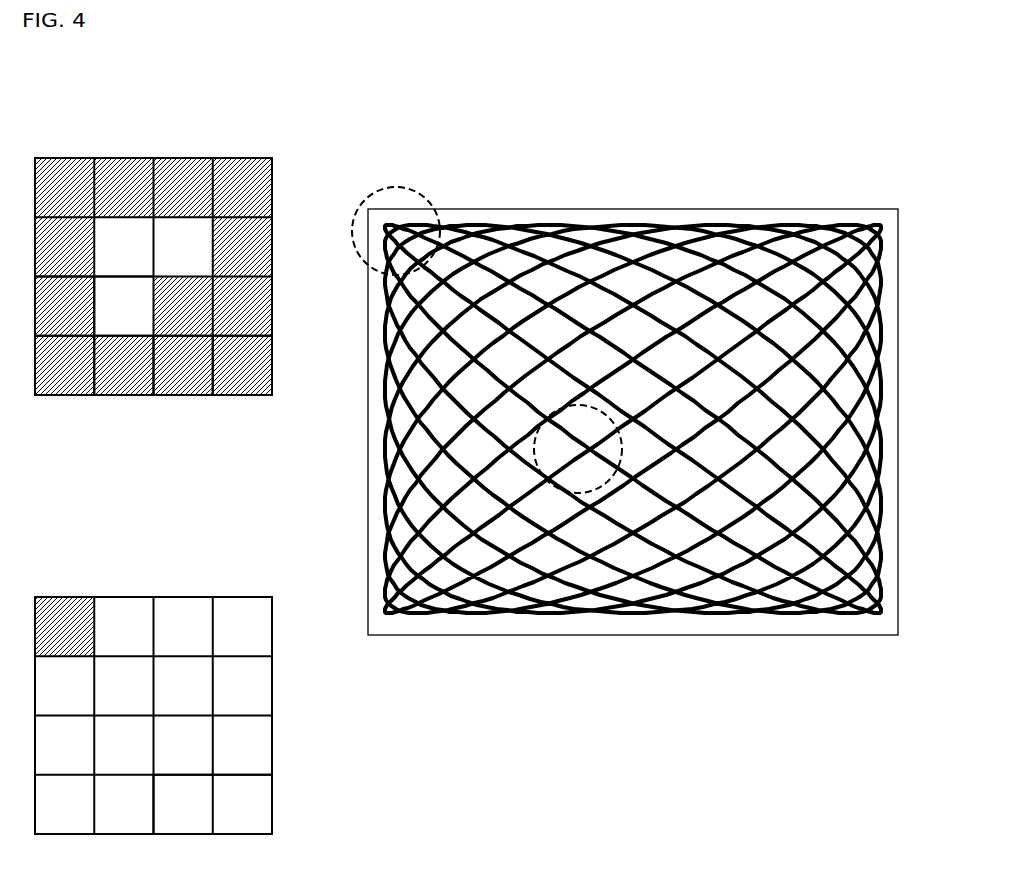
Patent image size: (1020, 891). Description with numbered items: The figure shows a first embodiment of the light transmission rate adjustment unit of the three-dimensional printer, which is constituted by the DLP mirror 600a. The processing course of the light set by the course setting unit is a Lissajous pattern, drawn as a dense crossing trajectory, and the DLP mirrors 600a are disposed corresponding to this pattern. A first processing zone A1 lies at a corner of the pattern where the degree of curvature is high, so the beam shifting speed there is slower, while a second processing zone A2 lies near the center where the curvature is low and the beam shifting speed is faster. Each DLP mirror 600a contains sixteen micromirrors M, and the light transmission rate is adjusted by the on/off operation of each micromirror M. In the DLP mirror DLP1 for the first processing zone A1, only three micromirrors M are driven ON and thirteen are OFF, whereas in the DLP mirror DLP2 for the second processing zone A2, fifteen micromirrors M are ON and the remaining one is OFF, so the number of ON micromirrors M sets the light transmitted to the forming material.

The DLP mirror in the first processing zone DLP1 is at (100, 123).
The DLP mirror in the second processing zone DLP2 is at (100, 592).
The micromirror M is at (70, 328).
The DLP mirror 600a is at (721, 208).
The first processing zone A1 is at (416, 190).
The second processing zone A2 is at (573, 493).